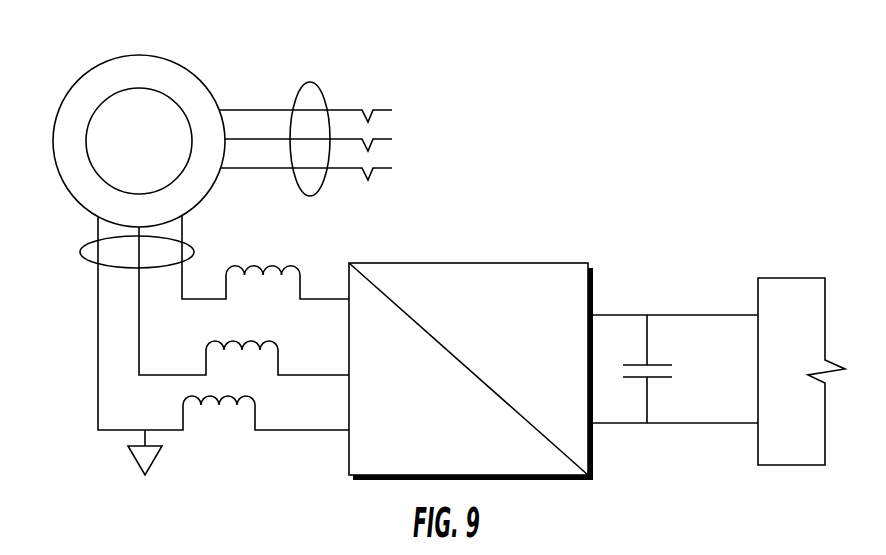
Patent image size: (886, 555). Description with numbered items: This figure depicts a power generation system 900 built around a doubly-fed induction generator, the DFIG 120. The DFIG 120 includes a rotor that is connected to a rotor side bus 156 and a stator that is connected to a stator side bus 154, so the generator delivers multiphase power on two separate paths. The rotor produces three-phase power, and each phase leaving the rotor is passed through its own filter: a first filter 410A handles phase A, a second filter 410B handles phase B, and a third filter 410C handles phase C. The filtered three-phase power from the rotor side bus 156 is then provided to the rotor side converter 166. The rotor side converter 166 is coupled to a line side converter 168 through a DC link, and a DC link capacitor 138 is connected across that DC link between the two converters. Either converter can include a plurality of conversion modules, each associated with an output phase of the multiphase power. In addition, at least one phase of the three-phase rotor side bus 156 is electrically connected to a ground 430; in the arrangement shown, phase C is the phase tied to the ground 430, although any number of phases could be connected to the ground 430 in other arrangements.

The DFIG 120 is at (152, 55).
The stator side bus 154 is at (314, 82).
The rotor side bus 156 is at (80, 252).
The first filter 410A is at (204, 285).
The second filter 410B is at (181, 357).
The third filter 410C is at (160, 414).
The ground 430 is at (158, 458).
The rotor side converter 166 is at (502, 262).
The DC link capacitor 138 is at (662, 363).
The line side converter 168 is at (792, 278).
The power generation system 900 is at (548, 127).